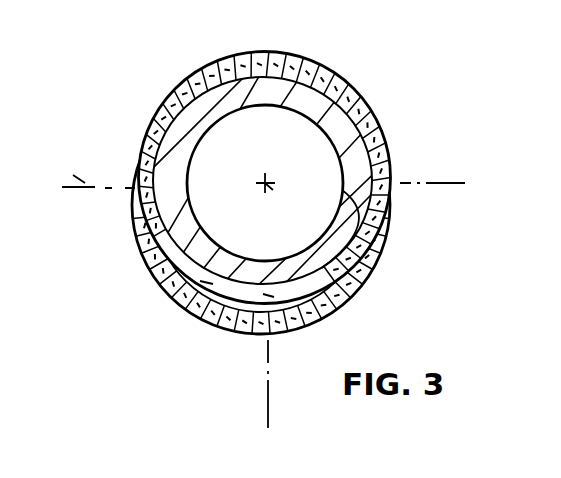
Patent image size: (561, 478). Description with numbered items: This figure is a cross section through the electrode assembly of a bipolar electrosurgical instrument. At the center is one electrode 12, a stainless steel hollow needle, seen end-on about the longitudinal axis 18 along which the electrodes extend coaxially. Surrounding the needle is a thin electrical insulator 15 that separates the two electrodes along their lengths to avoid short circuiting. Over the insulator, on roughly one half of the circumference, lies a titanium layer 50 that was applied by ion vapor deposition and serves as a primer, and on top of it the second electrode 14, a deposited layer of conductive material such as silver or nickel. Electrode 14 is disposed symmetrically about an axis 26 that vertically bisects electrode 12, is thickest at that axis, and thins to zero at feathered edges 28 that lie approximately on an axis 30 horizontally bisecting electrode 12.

The electrode 12 is at (343, 130).
The second electrode 14 is at (201, 320).
The electrical insulator 15 is at (167, 103).
The longitudinal axis 18 is at (265, 183).
The axis 26 is at (267, 382).
The edges 28 is at (125, 211).
The axis 30 is at (68, 174).
The layer 50 is at (360, 288).